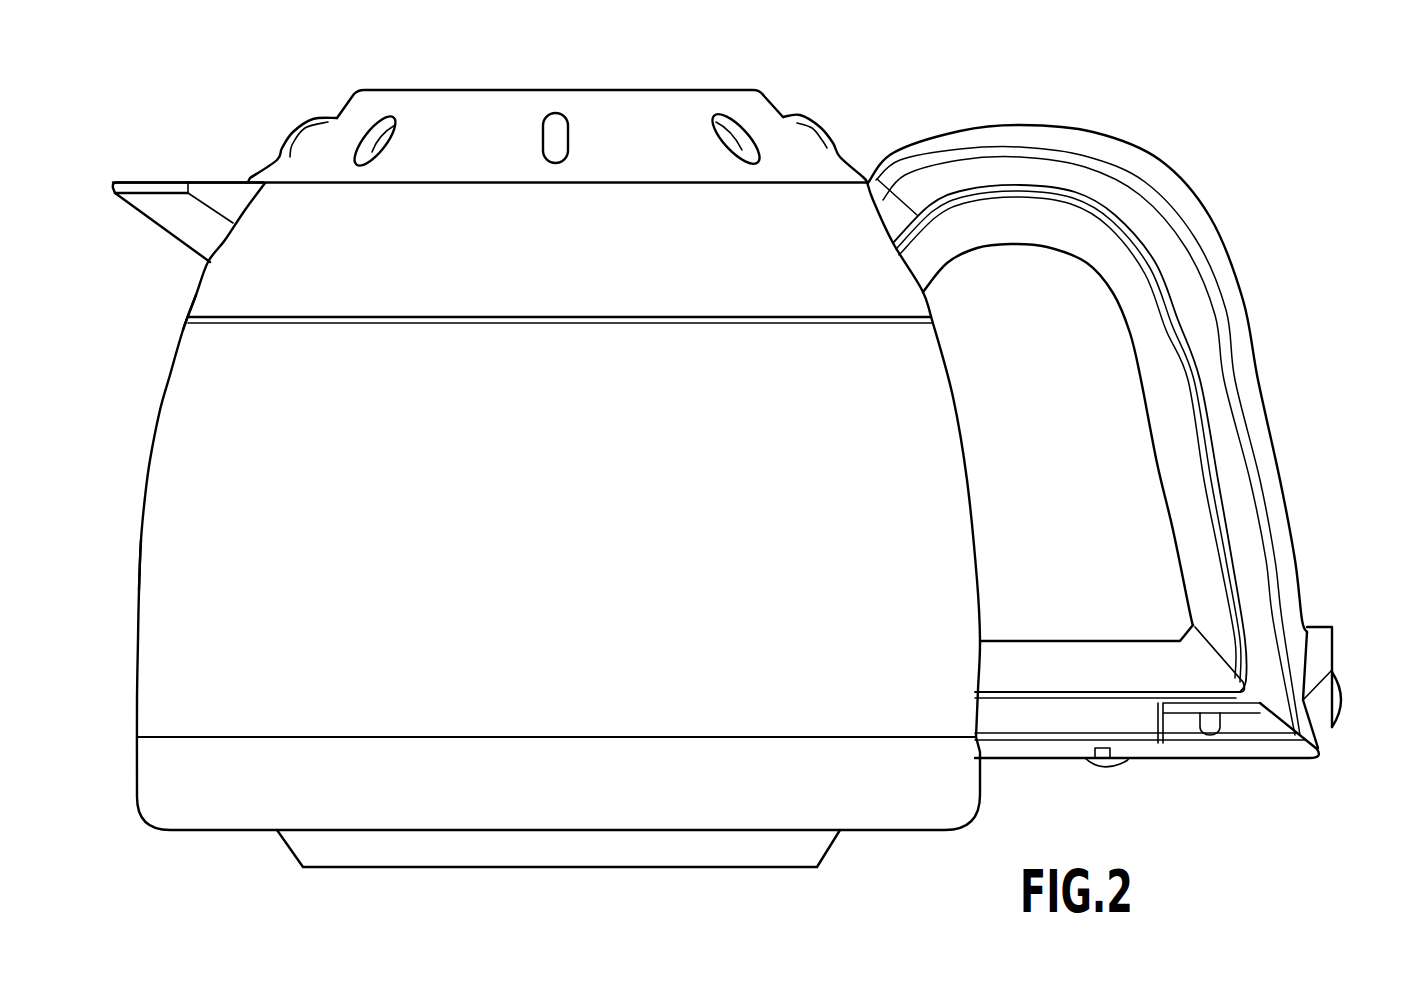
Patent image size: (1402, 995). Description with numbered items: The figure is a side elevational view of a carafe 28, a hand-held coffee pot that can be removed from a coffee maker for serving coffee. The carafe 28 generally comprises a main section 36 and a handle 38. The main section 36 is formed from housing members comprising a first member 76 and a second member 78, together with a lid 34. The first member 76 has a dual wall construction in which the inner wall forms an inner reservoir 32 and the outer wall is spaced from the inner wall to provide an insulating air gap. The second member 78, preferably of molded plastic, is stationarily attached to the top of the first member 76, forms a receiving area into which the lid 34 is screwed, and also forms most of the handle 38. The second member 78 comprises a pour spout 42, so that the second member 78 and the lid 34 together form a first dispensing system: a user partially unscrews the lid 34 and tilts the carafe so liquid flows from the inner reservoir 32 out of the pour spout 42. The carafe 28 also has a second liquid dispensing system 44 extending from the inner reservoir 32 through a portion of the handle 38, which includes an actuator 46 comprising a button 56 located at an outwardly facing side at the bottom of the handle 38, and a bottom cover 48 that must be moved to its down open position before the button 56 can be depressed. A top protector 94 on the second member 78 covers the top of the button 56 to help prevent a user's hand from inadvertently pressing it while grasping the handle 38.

The carafe 28 is at (955, 45).
The lid 34 is at (516, 98).
The pour spout 42 is at (160, 181).
The second member 78 is at (212, 283).
The main section 36 is at (160, 410).
The first member 76 is at (138, 563).
The inner reservoir 32 is at (870, 518).
The handle 38 is at (1191, 210).
The top protector 94 is at (1320, 637).
The actuator 46 is at (1345, 690).
The button 56 is at (1337, 722).
The bottom cover 48 is at (1172, 760).
The second liquid dispensing system 44 is at (1242, 796).